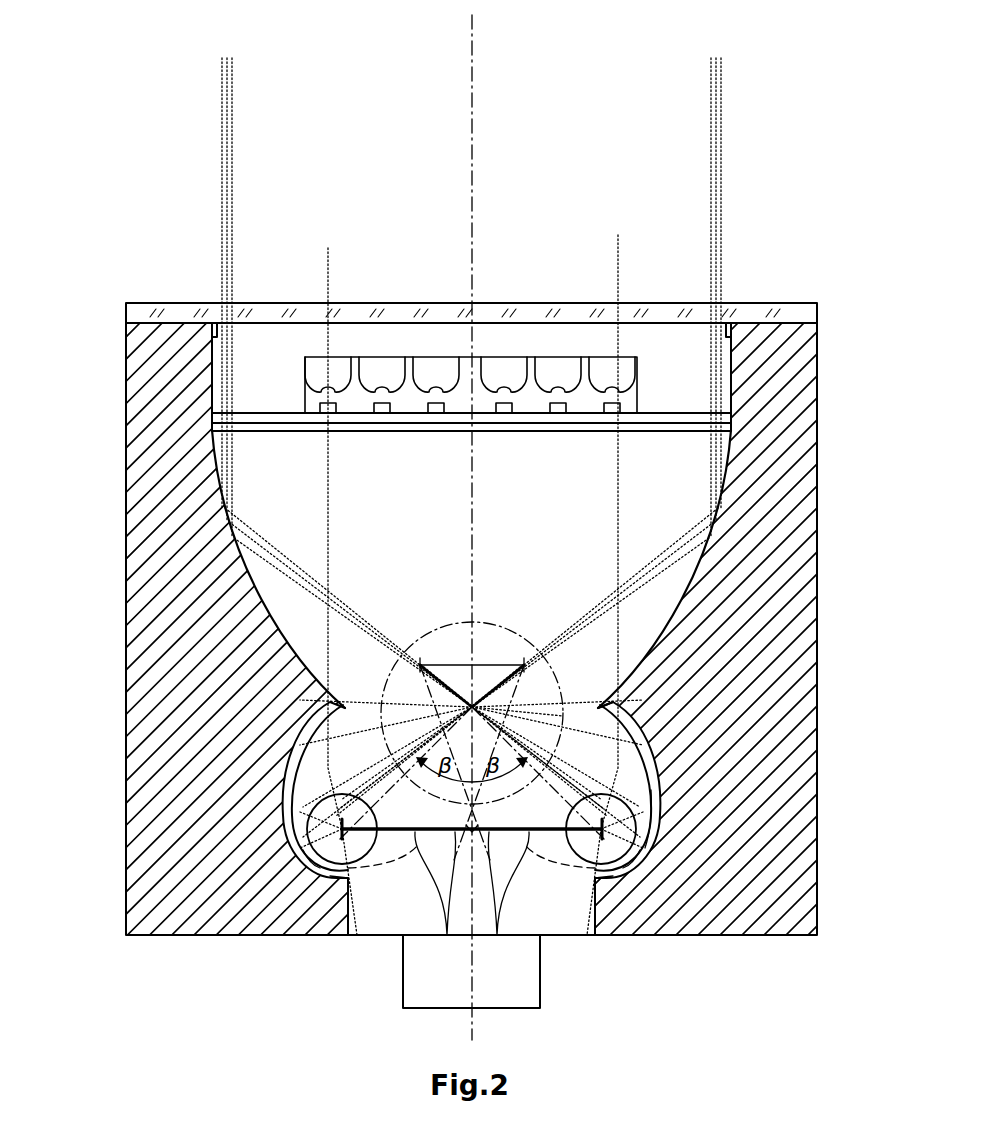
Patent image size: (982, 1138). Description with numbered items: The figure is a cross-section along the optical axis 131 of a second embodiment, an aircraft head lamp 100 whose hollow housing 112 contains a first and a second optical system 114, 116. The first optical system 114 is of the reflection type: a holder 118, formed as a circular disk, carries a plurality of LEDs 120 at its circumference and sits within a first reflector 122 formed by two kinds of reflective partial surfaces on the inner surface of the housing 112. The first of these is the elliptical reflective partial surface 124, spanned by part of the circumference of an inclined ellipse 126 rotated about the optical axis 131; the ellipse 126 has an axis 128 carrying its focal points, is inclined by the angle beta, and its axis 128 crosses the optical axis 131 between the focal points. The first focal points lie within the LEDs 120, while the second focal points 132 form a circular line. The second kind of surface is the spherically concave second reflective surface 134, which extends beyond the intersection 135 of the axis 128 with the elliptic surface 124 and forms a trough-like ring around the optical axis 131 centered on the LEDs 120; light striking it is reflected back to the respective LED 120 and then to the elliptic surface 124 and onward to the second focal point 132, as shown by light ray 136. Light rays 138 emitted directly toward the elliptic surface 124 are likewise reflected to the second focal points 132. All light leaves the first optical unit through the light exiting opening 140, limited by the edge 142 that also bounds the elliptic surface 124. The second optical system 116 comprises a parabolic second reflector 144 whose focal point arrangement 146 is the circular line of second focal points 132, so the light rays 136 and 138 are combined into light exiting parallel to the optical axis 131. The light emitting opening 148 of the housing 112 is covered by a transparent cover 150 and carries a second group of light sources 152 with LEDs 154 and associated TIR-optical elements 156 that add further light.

The lighting device 100 is at (90, 265).
The housing 112 is at (165, 568).
The first optical system 114 is at (652, 790).
The second optical system 116 is at (682, 640).
The holder 118 is at (442, 840).
The LEDs 120 is at (343, 796).
The first reflector 122 is at (647, 836).
The elliptical reflective partial surface 124 is at (305, 755).
The ellipse 126 is at (372, 682).
The axis 128 is at (430, 858).
The optical axis 131 is at (474, 120).
The second focal point 132 is at (420, 620).
The second reflective surface 134 is at (337, 870).
The intersection 135 is at (345, 873).
The light ray 136 is at (578, 742).
The light rays 138 is at (278, 563).
The light exiting opening 140 is at (563, 716).
The edge 142 is at (608, 660).
The second reflector 144 is at (697, 586).
The focal point arrangement 146 is at (480, 698).
The light emitting opening 148 is at (731, 412).
The transparent cover 150 is at (575, 312).
The second group of light sources 152 is at (392, 285).
The LEDs 154 is at (327, 430).
The TIR-optical elements 156 is at (323, 373).